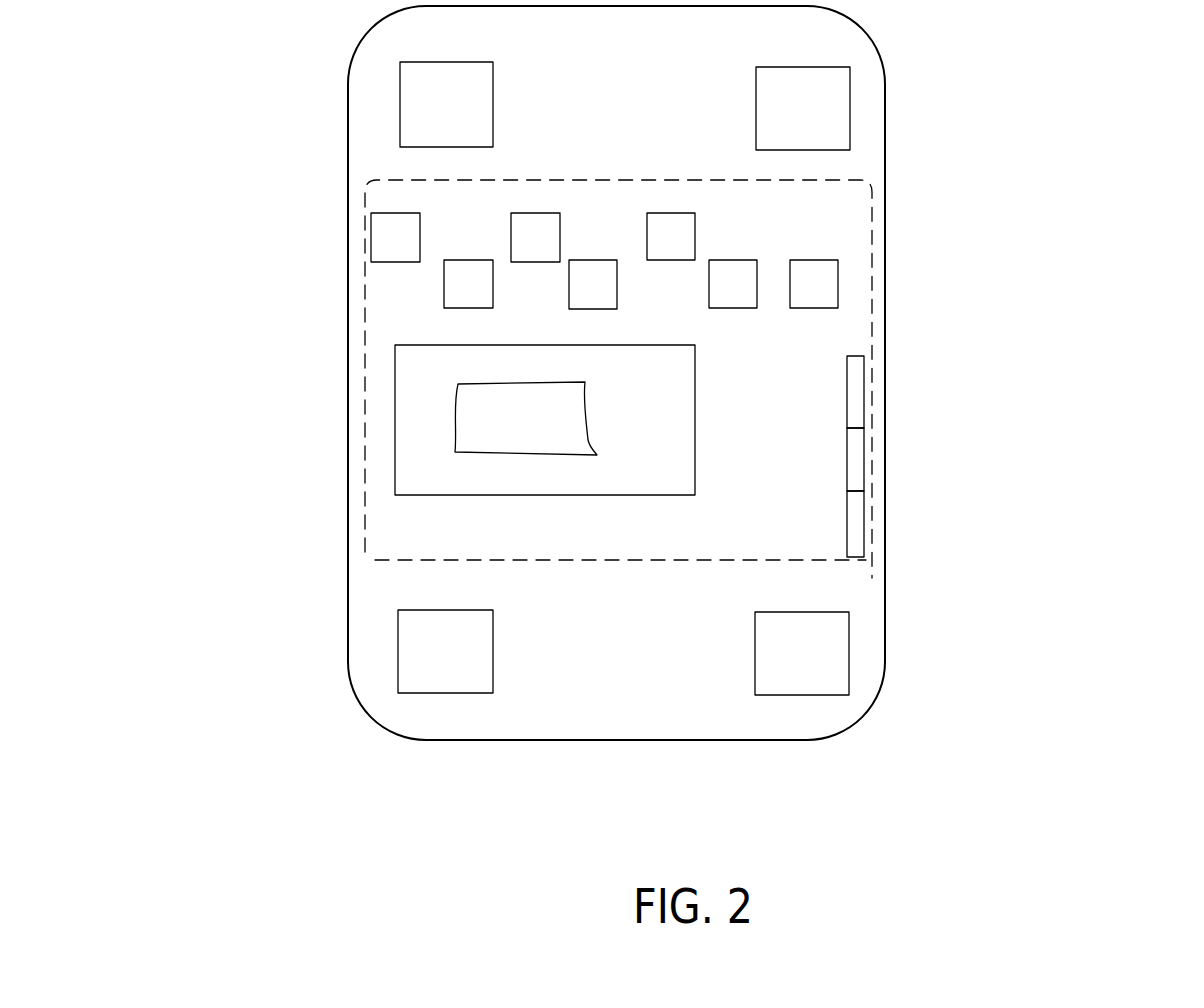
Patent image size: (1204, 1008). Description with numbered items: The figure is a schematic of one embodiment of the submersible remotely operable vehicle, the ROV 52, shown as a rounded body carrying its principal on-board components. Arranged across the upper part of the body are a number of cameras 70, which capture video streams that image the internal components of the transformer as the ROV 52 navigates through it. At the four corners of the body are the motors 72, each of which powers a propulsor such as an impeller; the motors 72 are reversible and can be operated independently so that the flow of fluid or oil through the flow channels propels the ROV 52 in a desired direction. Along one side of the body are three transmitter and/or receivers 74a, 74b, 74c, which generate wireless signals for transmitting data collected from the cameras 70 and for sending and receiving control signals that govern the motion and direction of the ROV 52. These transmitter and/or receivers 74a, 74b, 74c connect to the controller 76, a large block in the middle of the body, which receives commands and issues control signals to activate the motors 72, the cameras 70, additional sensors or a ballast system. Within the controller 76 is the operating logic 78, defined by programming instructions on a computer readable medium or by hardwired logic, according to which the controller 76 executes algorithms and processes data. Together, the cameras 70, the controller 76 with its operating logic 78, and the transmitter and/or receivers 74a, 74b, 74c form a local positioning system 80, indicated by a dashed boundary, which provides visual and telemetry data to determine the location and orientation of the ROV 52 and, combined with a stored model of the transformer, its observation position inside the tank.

The ROV 52 is at (900, 202).
The cameras 70 is at (647, 213).
The motors 72 is at (464, 124).
The transmitter and/or receiver 74a is at (865, 458).
The transmitter and/or receiver 74b is at (855, 459).
The transmitter and/or receiver 74c is at (855, 524).
The controller 76 is at (395, 421).
The operating logic 78 is at (524, 432).
The local positioning system 80 is at (882, 518).